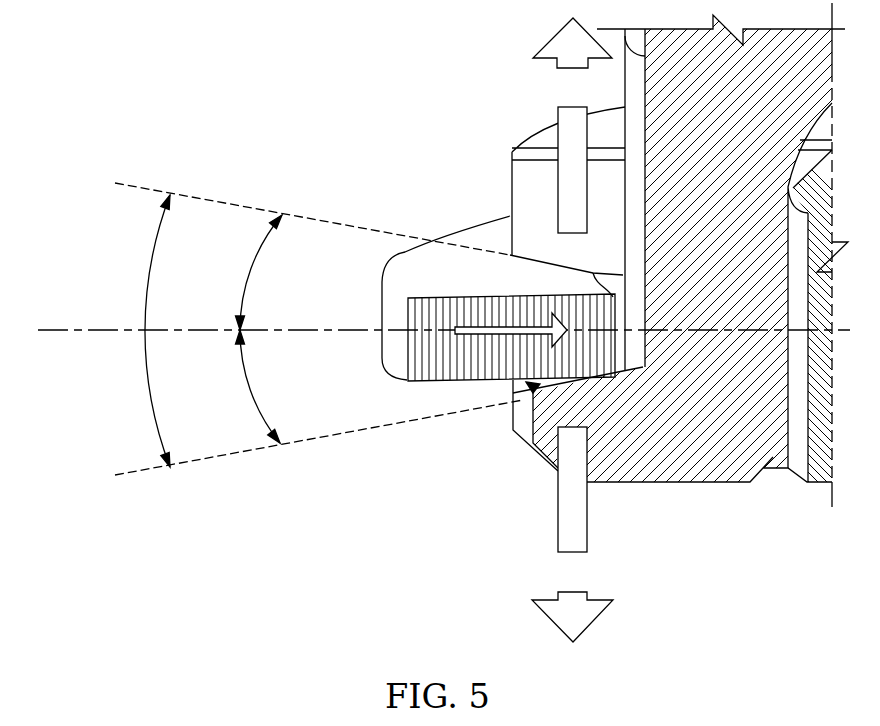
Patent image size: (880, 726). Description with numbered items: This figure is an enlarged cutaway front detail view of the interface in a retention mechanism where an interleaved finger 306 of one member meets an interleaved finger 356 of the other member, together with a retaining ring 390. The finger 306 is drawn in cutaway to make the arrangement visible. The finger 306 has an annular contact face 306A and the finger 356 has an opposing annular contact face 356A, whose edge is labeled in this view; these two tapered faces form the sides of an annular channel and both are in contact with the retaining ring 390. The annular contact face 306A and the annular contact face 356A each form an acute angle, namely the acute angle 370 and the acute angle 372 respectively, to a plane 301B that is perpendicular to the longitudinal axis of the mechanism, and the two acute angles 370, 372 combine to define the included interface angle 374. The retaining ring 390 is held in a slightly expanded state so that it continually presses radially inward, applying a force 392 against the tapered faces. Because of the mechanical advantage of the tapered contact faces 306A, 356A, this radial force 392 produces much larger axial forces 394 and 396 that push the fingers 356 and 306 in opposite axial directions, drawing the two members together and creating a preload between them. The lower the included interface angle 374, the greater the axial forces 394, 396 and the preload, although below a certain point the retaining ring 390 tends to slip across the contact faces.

The plane 301B is at (88, 328).
The finger 306 is at (660, 470).
The annular contact face 306A is at (522, 401).
The finger 356 is at (523, 210).
The annular contact face 356A is at (540, 240).
The acute angle 370 is at (250, 391).
The acute angle 372 is at (250, 270).
The included interface angle 374 is at (145, 353).
The retaining ring 390 is at (395, 280).
The force 392 is at (503, 335).
The axial force 394 is at (598, 100).
The axial force 396 is at (598, 584).